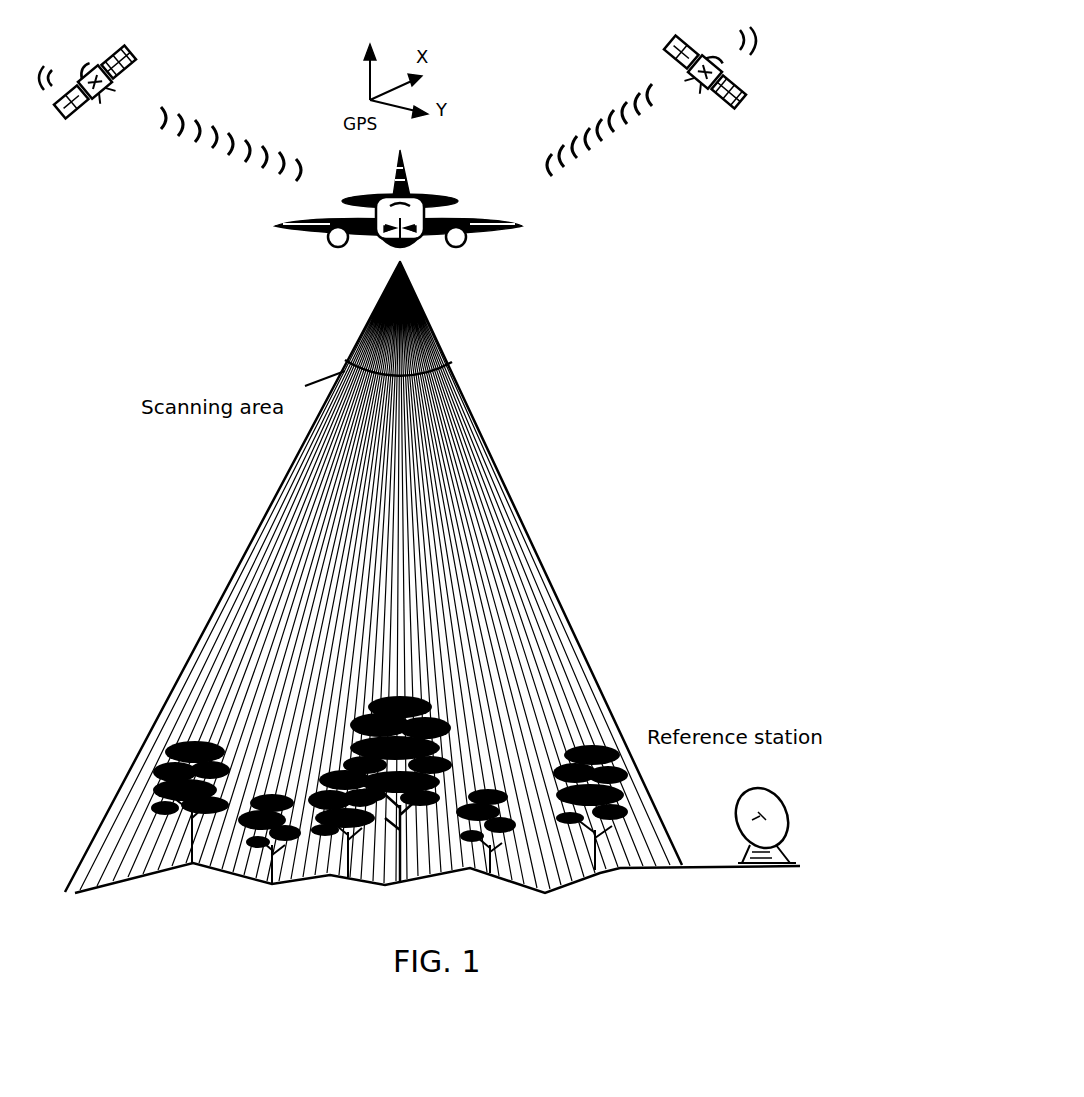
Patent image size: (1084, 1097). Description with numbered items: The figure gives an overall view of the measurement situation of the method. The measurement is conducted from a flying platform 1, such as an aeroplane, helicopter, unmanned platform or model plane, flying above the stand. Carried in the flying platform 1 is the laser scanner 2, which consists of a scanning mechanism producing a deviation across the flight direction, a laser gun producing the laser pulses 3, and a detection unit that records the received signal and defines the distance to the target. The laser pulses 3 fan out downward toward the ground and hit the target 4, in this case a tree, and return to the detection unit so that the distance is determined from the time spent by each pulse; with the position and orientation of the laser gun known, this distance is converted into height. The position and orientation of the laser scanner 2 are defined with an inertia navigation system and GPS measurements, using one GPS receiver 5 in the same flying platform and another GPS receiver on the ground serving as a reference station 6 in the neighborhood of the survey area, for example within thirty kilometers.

The flying platform 1 is at (470, 210).
The laser scanner 2 is at (372, 247).
The laser pulses 3 is at (212, 618).
The target 4 is at (165, 756).
The GPS receiver 5 is at (430, 247).
The reference station 6 is at (780, 809).